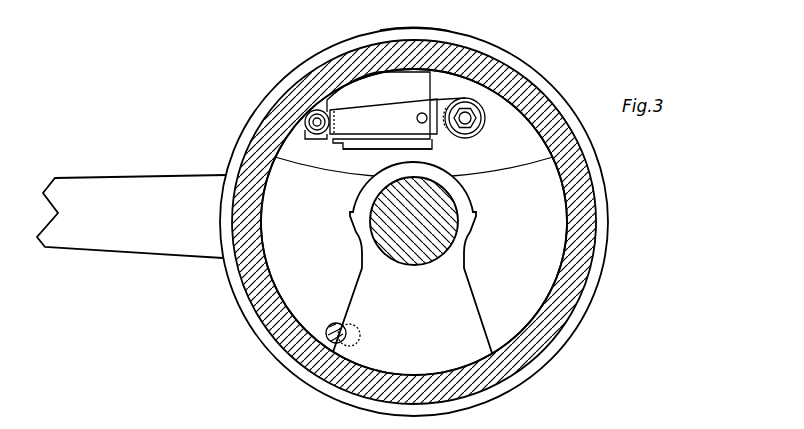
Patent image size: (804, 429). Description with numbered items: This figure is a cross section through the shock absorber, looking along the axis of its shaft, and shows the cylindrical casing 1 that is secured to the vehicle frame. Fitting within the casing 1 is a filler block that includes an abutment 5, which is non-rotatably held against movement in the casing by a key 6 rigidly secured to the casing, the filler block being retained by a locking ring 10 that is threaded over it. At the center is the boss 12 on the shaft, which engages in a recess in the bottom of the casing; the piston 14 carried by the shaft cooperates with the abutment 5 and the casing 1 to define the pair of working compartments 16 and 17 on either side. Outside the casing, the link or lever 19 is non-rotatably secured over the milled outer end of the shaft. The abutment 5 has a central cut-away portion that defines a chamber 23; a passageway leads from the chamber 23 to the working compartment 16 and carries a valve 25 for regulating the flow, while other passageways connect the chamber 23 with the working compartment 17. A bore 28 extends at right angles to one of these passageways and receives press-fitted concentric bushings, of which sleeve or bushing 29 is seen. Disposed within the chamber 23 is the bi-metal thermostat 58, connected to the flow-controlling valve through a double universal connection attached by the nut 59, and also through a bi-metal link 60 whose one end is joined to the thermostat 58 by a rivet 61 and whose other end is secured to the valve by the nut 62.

The cylindrical casing 1 is at (297, 360).
The abutment 5 is at (505, 117).
The key 6 is at (383, 30).
The locking ring 10 is at (595, 280).
The boss 12 is at (442, 238).
The piston 14 is at (409, 257).
The working compartment 16 is at (324, 212).
The working compartment 17 is at (502, 222).
The link or lever 19 is at (131, 216).
The chamber 23 is at (367, 88).
The valve 25 is at (310, 138).
The bore or passageway 28 is at (464, 140).
The sleeve or bushing 29 is at (489, 128).
The bi-metal thermostat 58 is at (347, 148).
The nut 59 is at (486, 100).
The bi-metal link 60 is at (383, 116).
The rivet 61 is at (421, 112).
The nut 62 is at (304, 120).